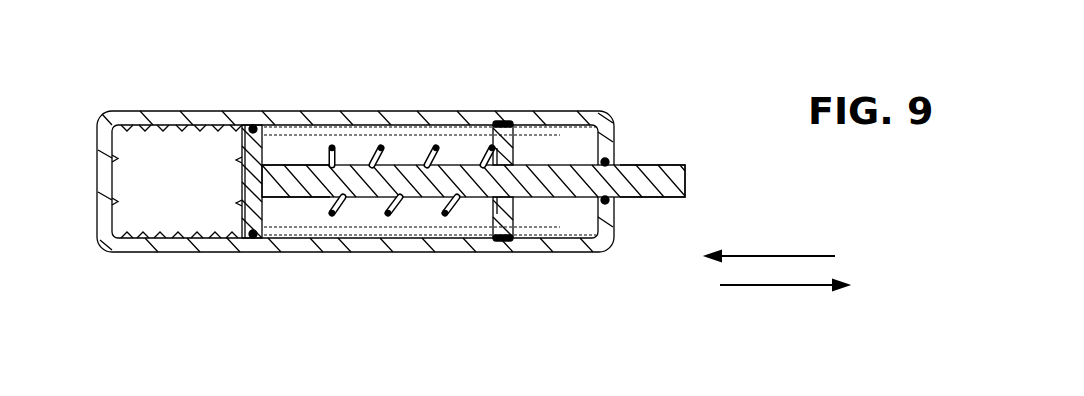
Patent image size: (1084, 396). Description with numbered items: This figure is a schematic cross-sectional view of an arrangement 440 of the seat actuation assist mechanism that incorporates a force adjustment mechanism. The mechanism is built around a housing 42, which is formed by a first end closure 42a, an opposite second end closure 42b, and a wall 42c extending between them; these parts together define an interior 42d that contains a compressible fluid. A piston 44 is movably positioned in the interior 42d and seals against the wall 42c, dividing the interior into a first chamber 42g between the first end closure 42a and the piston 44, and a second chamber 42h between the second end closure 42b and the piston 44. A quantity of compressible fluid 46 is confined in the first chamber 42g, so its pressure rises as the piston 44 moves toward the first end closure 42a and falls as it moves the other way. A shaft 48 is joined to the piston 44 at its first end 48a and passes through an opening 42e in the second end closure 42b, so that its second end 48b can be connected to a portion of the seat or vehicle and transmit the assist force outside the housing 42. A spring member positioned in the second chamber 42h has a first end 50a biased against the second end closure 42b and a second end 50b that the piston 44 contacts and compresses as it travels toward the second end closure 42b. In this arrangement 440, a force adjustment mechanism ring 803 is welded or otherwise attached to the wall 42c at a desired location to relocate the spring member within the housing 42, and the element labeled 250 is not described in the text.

The arrangement of the seat actuation assist mechanism 440 is at (752, 78).
The housing 42 is at (432, 108).
The first end closure 42a is at (100, 177).
The second end closure 42b is at (613, 142).
The wall 42c is at (250, 115).
The interior 42d is at (313, 148).
The opening 42e is at (618, 203).
The first chamber 42g is at (127, 127).
The second chamber 42h is at (398, 142).
The piston 44 is at (243, 148).
The compressible fluid 46 is at (102, 197).
The shaft 48 is at (655, 164).
The first end of the shaft 48a is at (275, 185).
The second end of the shaft 48b is at (663, 199).
The first end of the spring member 50a is at (490, 147).
The second end of the spring member 50b is at (333, 147).
The lower pins 250 is at (447, 213).
The force adjustment mechanism ring 803 is at (518, 125).